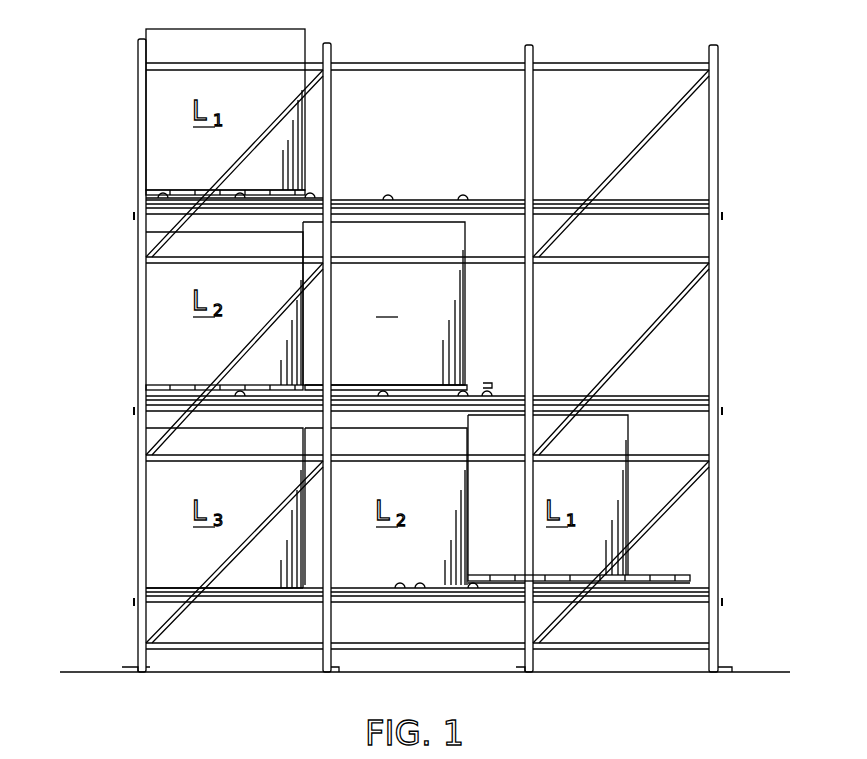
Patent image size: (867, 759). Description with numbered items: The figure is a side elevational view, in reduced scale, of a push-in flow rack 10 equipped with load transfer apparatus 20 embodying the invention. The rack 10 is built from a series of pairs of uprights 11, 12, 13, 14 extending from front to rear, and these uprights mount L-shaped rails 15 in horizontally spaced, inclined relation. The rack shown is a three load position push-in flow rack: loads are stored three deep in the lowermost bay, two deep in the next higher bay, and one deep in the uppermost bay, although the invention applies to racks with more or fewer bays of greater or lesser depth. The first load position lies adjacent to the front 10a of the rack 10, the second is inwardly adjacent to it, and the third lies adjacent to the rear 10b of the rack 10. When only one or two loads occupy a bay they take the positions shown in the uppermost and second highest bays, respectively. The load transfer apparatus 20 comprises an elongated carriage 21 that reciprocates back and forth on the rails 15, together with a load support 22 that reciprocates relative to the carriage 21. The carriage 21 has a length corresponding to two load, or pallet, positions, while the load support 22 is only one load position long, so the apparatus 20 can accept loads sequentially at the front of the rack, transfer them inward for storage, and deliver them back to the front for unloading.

The push-in flow rack 10 is at (419, 355).
The front of the rack 10a is at (140, 498).
The rear of the rack 10b is at (793, 527).
The upright 11 is at (138, 284).
The upright 12 is at (331, 252).
The upright 13 is at (533, 295).
The upright 14 is at (714, 242).
The L-shaped rail 15 is at (245, 597).
The load transfer apparatus 20 is at (185, 196).
The carriage 21 is at (406, 200).
The load support 22 is at (305, 196).